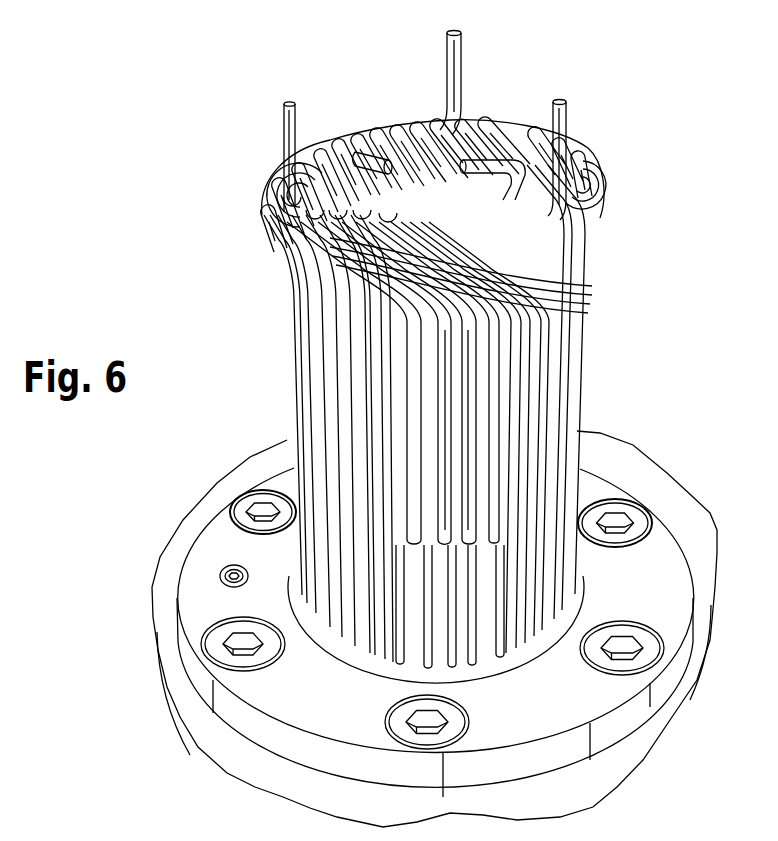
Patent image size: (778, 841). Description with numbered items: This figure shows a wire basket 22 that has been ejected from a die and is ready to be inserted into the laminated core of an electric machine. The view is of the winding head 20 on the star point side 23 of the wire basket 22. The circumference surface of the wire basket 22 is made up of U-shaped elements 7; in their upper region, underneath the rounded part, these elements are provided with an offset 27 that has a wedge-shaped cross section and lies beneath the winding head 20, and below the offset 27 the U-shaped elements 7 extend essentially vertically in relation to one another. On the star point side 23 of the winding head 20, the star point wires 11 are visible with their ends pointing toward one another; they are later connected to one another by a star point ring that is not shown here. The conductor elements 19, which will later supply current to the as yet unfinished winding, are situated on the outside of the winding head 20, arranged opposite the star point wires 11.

The U-shaped elements 7 is at (375, 428).
The star point wires 11 is at (387, 160).
The conductor elements 19 is at (285, 137).
The winding head 20 is at (622, 190).
The wire basket 22 is at (610, 371).
The star point side 23 is at (240, 215).
The offset 27 is at (390, 272).